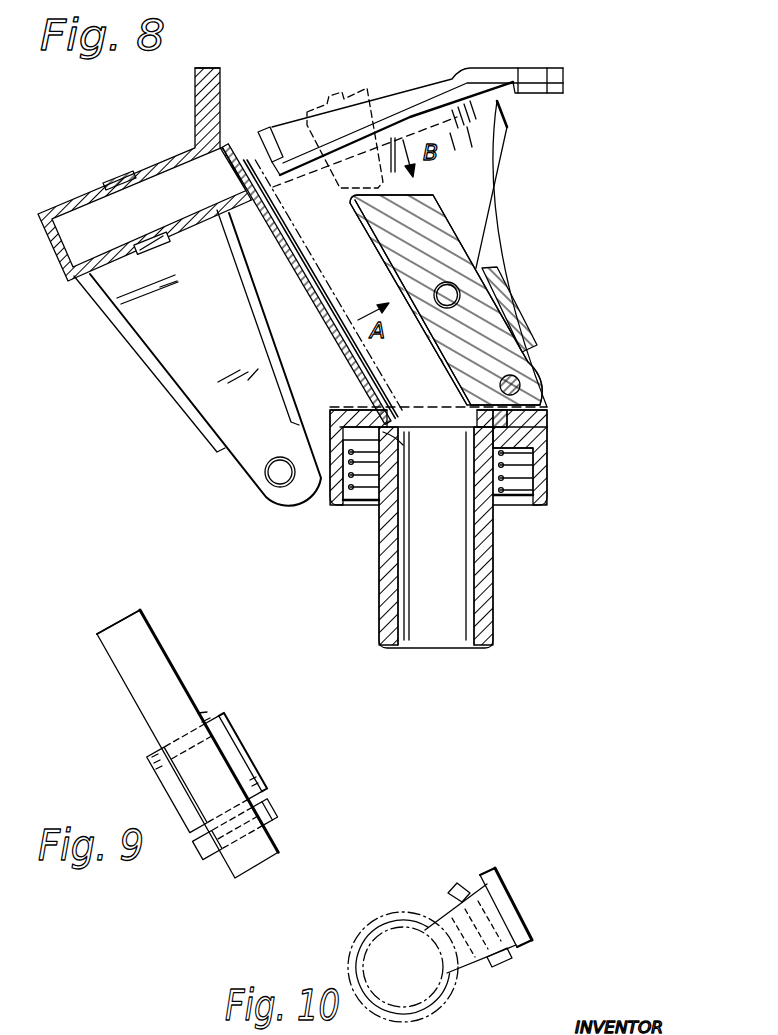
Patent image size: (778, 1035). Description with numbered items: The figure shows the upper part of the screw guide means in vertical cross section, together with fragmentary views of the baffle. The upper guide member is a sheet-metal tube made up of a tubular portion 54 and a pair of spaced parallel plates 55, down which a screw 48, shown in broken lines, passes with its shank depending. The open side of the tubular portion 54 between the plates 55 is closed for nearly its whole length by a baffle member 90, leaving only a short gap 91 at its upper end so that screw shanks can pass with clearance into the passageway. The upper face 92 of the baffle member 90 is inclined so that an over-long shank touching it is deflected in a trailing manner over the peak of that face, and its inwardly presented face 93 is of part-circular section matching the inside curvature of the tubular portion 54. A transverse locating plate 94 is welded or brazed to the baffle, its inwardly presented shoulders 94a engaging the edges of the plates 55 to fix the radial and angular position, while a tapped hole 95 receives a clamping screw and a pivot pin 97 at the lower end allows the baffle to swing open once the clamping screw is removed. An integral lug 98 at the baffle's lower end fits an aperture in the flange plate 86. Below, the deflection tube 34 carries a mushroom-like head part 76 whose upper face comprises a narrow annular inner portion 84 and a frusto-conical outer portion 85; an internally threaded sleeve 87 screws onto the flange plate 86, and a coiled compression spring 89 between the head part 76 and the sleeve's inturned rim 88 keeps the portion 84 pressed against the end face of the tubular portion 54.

In FIG. 8, the deflection tube 34 is at (487, 572).
In FIG. 8, the screw 48 is at (383, 95).
In FIG. 8, the tubular portion 54 is at (284, 282).
In FIG. 10, the tubular portion 54 is at (388, 916).
In FIG. 8, the spaced parallel plates 55 is at (474, 201).
In FIG. 8, the head part 76 is at (533, 423).
In FIG. 8, the annular inner portion 84 is at (403, 436).
In FIG. 8, the outer portion 85 is at (330, 503).
In FIG. 8, the flange plate 86 is at (350, 407).
In FIG. 8, the internally threaded sleeve 87 is at (540, 463).
In FIG. 8, the inturned rim or flange 88 is at (527, 503).
In FIG. 8, the coiled compression spring 89 is at (523, 480).
In FIG. 8, the baffle member 90 is at (443, 253).
In FIG. 9, the baffle member 90 is at (165, 672).
In FIG. 8, the gap or clearance space 91 is at (415, 183).
In FIG. 8, the upper face 92 is at (418, 191).
In FIG. 9, the upper face 92 is at (118, 622).
In FIG. 8, the inwardly presented face 93 is at (390, 273).
In FIG. 10, the inwardly presented face 93 is at (437, 947).
In FIG. 8, the transverse locating plate 94 is at (518, 320).
In FIG. 9, the transverse locating plate 94 is at (228, 743).
In FIG. 10, the transverse locating plate 94 is at (513, 910).
In FIG. 10, the inwardly presented shoulders 94a is at (480, 874).
In FIG. 8, the tapped hole 95 is at (460, 293).
In FIG. 8, the pivot pin 97 is at (520, 380).
In FIG. 9, the pivot pin 97 is at (266, 810).
In FIG. 10, the pivot pin 97 is at (498, 960).
In FIG. 8, the integral lug 98 is at (458, 405).